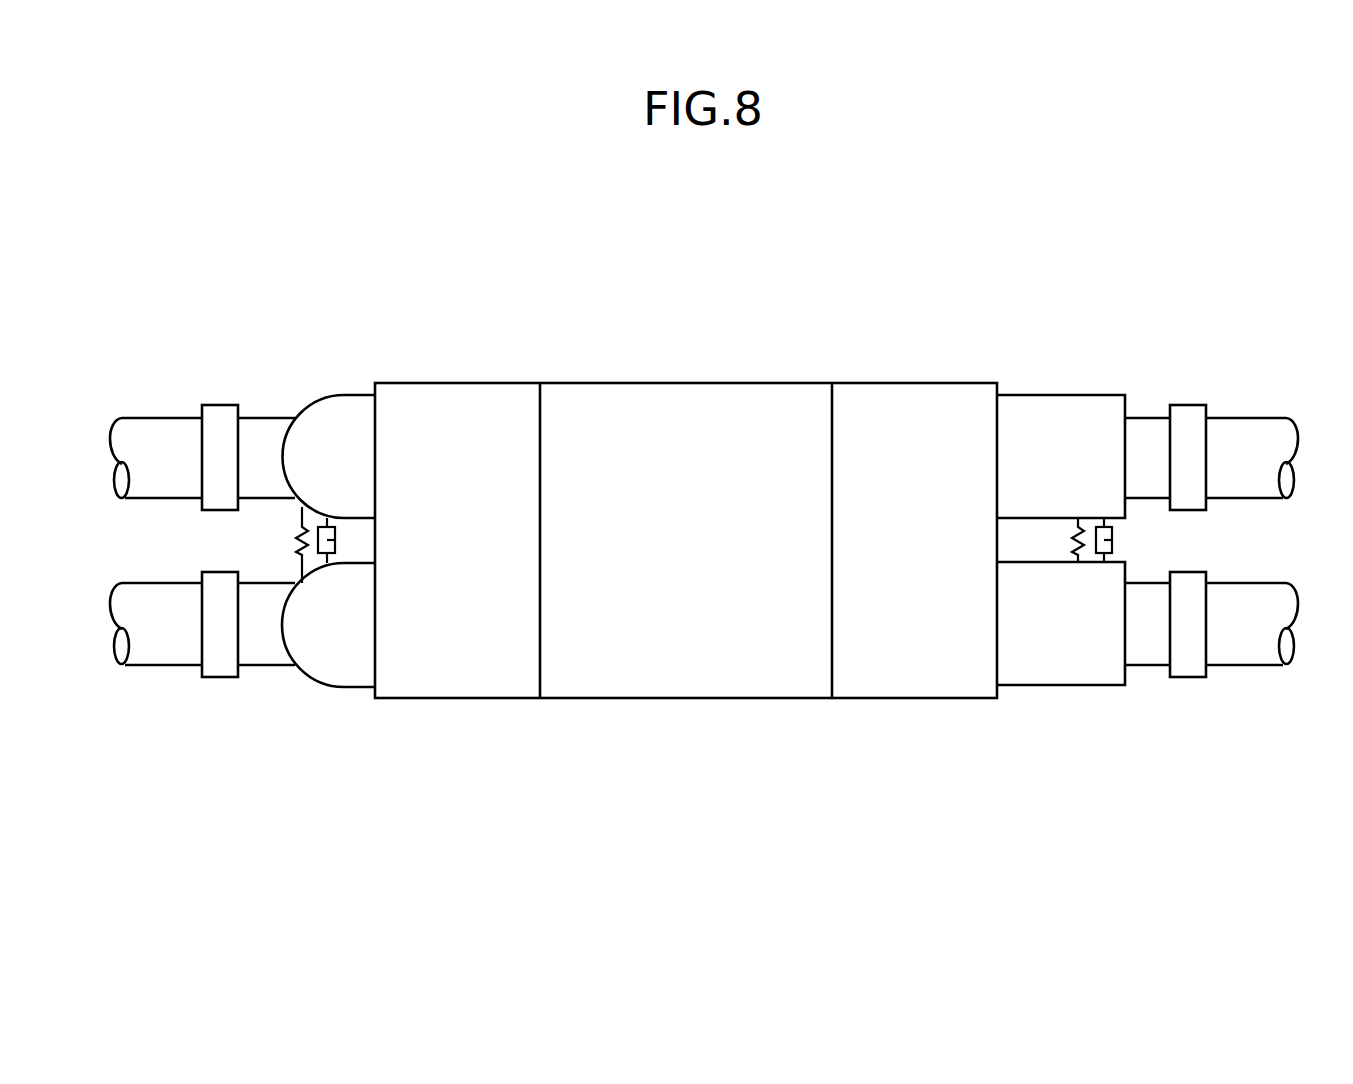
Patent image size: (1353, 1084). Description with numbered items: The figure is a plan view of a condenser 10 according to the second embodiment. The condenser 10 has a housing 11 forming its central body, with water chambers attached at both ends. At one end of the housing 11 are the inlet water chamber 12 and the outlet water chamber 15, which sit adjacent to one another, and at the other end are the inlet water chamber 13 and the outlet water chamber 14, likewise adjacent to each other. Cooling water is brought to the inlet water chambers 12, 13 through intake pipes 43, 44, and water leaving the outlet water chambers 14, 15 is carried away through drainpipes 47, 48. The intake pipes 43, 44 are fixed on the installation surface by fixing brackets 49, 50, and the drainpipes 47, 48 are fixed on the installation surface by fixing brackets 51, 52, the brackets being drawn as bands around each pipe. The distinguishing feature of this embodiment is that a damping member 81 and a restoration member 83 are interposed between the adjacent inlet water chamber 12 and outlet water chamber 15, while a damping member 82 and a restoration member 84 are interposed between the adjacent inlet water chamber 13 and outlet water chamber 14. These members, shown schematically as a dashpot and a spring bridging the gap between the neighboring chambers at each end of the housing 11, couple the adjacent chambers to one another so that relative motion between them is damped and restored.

The condenser 10 is at (698, 315).
The housing 11 is at (877, 685).
The inlet water chamber 12 is at (1070, 655).
The inlet water chamber 13 is at (347, 412).
The outlet water chamber 14 is at (352, 663).
The outlet water chamber 15 is at (1067, 412).
The intake pipe 43 is at (1256, 653).
The intake pipe 44 is at (148, 428).
The drainpipe 47 is at (148, 653).
The drainpipe 48 is at (1256, 428).
The fixing bracket 49 is at (1188, 655).
The fixing bracket 50 is at (218, 413).
The fixing bracket 51 is at (215, 655).
The fixing bracket 52 is at (1185, 415).
The damping member 81 is at (1110, 540).
The damping member 82 is at (334, 540).
The restoration member 83 is at (1078, 531).
The restoration member 84 is at (300, 531).